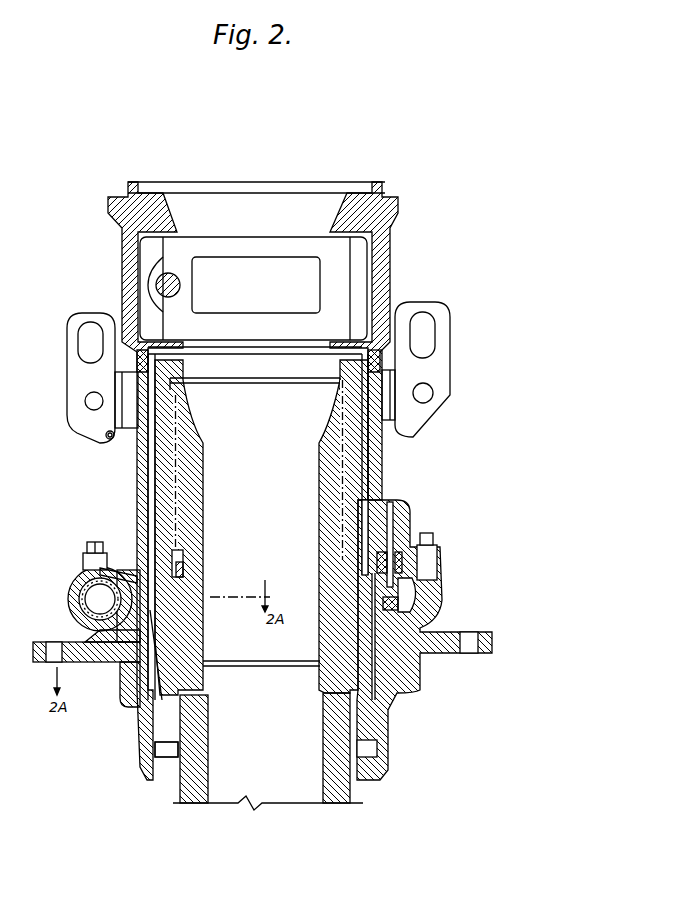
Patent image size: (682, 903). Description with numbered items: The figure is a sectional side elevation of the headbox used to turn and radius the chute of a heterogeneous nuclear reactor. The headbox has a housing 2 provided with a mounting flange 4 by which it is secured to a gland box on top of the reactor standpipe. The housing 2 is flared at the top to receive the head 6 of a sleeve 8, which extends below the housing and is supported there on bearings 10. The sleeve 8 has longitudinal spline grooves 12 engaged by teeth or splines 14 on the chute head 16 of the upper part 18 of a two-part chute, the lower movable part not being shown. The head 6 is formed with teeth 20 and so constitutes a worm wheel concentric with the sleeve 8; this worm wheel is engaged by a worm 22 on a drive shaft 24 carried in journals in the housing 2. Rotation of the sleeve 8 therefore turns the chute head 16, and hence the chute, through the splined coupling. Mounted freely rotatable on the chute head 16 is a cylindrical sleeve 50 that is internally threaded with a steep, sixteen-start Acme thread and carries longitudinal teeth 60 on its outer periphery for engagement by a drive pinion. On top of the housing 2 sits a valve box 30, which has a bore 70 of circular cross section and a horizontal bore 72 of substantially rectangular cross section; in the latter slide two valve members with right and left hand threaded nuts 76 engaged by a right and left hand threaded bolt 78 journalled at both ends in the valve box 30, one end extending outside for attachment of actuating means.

The housing 2 is at (440, 600).
The mounting flange 4 is at (100, 663).
The head 6 is at (140, 563).
The sleeve 8 is at (143, 742).
The bearings 10 is at (97, 628).
The longitudinal spline grooves 12 is at (152, 628).
The teeth or splines 14 is at (155, 598).
The chute head 16 is at (190, 650).
The upper part of chute 18 is at (323, 740).
The teeth 20 is at (83, 568).
The worm 22 is at (70, 585).
The drive shaft 24 is at (100, 597).
The valve box 30 is at (382, 476).
The cylindrical sleeve 50 is at (170, 392).
The longitudinal teeth 60 is at (160, 475).
The bore 70 is at (172, 215).
The horizontal bore 72 is at (358, 260).
The right and left hand threaded nuts 76 is at (153, 278).
The right and left hand threaded bolt 78 is at (180, 285).